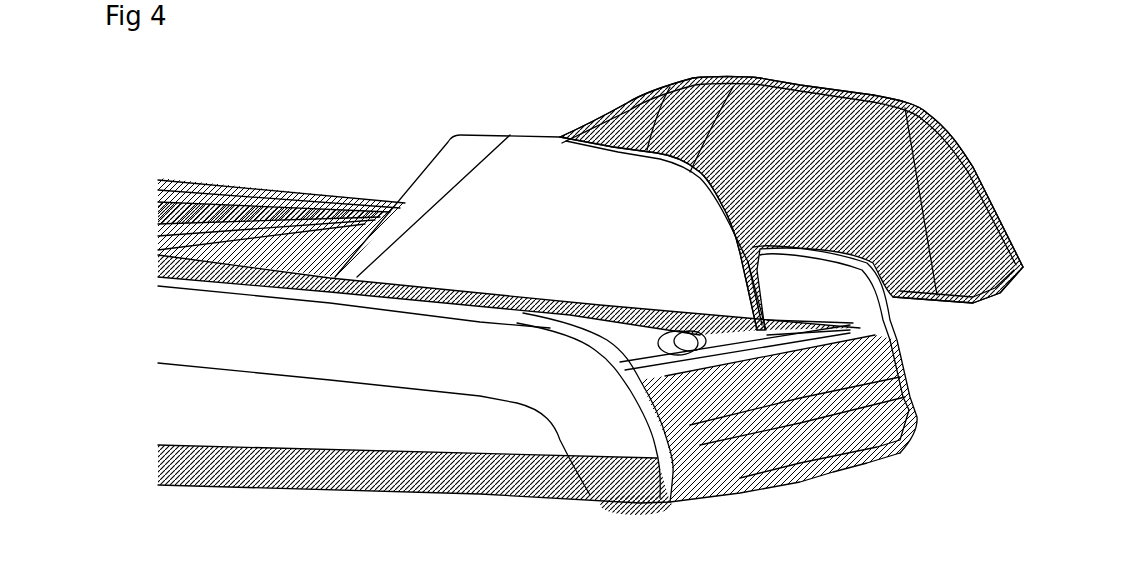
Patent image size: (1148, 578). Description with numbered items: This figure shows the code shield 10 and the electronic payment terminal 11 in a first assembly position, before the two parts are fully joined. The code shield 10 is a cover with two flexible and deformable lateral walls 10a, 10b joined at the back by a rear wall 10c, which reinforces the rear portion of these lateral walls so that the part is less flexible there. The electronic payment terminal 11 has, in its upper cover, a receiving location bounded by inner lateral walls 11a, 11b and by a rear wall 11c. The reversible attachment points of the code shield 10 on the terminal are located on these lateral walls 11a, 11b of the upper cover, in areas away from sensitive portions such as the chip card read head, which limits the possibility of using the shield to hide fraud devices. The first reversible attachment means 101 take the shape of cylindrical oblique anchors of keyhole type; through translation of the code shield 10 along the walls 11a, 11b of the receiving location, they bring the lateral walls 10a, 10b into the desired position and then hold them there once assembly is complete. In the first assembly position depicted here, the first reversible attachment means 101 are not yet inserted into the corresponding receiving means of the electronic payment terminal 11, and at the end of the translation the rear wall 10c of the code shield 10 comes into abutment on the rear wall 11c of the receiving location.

The code shield 10 is at (740, 73).
The lateral wall of the code shield 10a is at (880, 97).
The lateral wall of the code shield 10b is at (471, 132).
The rear wall of the code shield 10c is at (621, 118).
The electronic payment terminal 11 is at (877, 443).
The lateral wall of the electronic payment terminal 11a is at (878, 317).
The lateral wall of the electronic payment terminal 11b is at (642, 480).
The rear wall of the receiving location 11c is at (308, 268).
The first reversible attachment means 101 is at (690, 347).